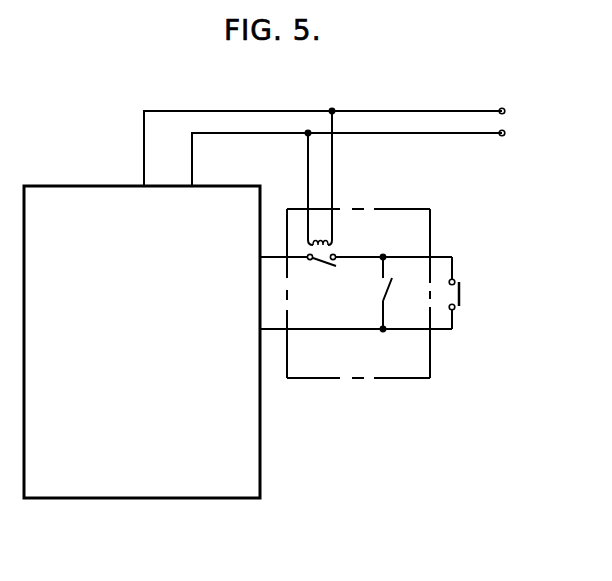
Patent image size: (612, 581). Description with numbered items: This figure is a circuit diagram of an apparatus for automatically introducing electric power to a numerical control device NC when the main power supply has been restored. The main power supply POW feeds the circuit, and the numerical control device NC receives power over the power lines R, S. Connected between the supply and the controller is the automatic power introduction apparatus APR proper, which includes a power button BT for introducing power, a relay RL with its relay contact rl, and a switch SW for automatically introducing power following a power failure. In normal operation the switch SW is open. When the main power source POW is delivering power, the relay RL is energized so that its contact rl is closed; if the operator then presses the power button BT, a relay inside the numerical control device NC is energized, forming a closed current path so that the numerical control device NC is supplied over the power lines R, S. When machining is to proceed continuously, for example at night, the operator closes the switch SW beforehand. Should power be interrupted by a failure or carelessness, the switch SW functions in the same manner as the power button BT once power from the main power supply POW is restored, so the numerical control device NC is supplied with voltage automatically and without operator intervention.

The numerical control device NC is at (153, 494).
The power line R is at (144, 152).
The power line S is at (192, 153).
The main power supply POW is at (528, 123).
The automatic power introduction apparatus APR is at (410, 218).
The relay RL is at (336, 182).
The relay contact rl is at (321, 262).
The switch SW is at (348, 220).
The power button BT is at (469, 293).